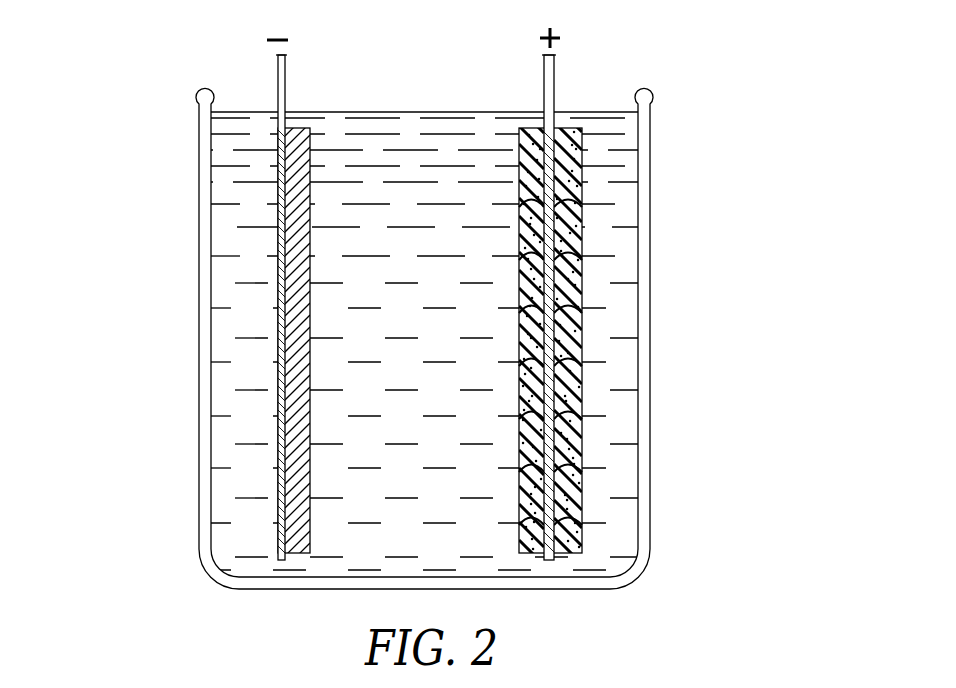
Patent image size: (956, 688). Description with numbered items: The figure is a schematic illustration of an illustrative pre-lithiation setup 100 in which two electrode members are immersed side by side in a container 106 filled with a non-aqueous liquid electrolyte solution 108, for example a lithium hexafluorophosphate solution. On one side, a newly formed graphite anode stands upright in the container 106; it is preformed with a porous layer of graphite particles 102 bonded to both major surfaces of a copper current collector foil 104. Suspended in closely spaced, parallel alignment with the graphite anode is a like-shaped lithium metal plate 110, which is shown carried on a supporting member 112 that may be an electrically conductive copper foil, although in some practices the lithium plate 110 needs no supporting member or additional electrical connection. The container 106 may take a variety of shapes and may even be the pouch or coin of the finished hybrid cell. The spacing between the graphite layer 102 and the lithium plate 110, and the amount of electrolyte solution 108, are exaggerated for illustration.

The setup 100 is at (150, 90).
The graphite particles 102 is at (534, 277).
The copper current collector foil 104 is at (552, 102).
The container 106 is at (652, 192).
The electrolyte solution 108 is at (226, 245).
The lithium metal plate 110 is at (302, 183).
The supporting member 112 is at (280, 101).